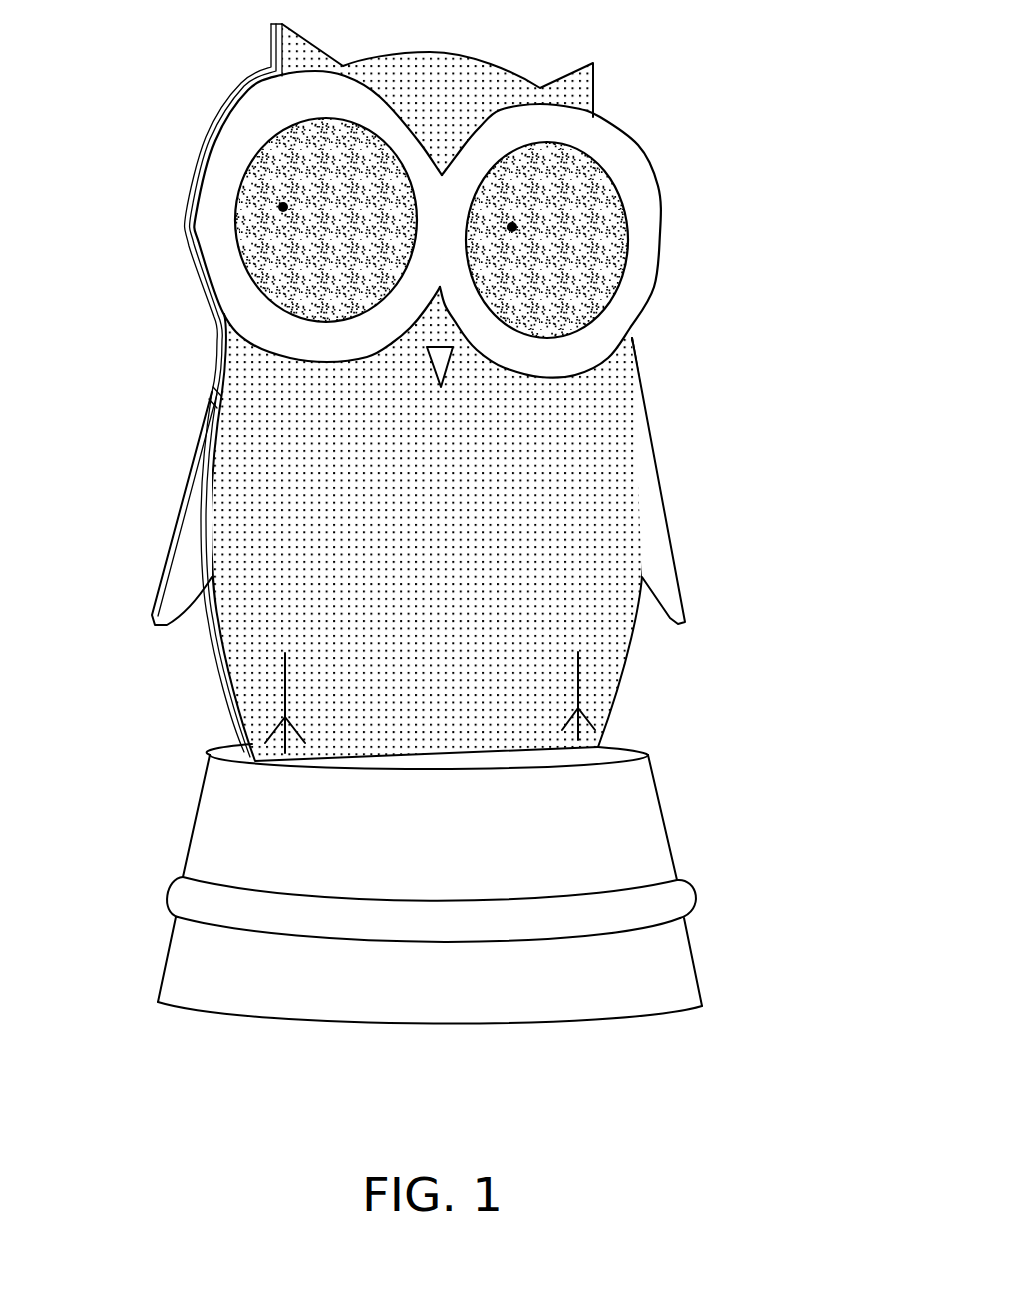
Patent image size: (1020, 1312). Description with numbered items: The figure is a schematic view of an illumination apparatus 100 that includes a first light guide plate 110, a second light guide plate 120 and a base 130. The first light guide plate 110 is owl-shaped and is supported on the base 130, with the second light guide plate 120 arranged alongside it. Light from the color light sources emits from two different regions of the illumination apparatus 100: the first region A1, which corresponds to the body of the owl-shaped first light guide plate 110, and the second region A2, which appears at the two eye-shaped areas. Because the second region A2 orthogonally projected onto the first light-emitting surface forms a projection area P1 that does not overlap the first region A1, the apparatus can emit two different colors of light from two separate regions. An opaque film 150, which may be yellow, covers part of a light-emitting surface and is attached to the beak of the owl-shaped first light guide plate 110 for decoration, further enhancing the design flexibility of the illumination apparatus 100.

The illumination apparatus 100 is at (426, 571).
The first light guide plate 110 is at (426, 392).
The second light guide plate 120 is at (215, 350).
The base 130 is at (650, 822).
The opaque film 150 is at (440, 358).
The first region A1 is at (610, 628).
The second region A2 is at (262, 173).
The projection area P1 is at (426, 228).